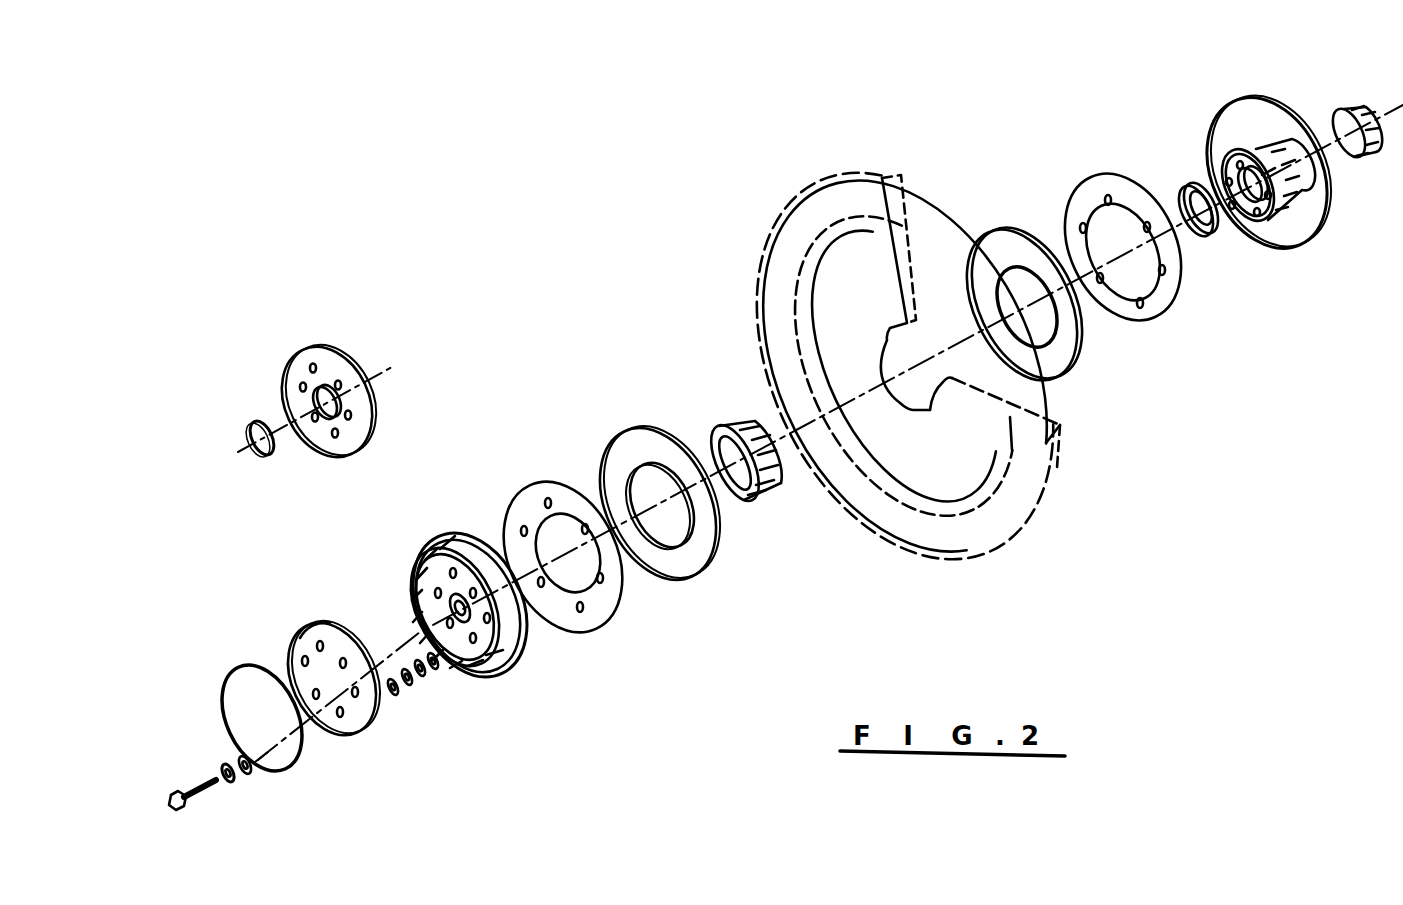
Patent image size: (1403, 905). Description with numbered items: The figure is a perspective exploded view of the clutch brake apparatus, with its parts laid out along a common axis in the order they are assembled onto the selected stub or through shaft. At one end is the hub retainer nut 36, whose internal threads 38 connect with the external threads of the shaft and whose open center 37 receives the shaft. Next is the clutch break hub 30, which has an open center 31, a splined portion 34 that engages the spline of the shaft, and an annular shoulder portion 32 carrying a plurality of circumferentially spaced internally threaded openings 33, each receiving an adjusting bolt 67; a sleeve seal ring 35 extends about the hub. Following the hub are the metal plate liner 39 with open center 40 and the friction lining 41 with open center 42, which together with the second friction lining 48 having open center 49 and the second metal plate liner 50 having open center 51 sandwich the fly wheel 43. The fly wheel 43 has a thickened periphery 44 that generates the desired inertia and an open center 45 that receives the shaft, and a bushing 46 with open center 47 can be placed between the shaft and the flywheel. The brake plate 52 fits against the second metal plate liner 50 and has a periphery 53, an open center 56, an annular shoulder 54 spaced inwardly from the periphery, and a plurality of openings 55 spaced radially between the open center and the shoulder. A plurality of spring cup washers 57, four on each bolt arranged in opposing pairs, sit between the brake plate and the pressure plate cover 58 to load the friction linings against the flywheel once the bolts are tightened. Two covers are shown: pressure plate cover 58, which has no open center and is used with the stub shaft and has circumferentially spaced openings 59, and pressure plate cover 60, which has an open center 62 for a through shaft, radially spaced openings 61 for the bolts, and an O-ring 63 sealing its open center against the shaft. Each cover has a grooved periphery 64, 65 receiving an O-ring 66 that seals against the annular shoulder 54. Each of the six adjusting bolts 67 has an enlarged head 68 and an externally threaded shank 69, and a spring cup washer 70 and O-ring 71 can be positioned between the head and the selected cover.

The clutch break hub 30 is at (1303, 233).
The open center 31 is at (1240, 146).
The annular shoulder portion 32 is at (1300, 193).
The internally threaded openings 33 is at (1236, 148).
The splined portion 34 is at (1246, 146).
The sleeve seal ring 35 is at (1352, 105).
The hub retainer nut 36 is at (1222, 235).
The open center 37 is at (1188, 195).
The internal threads 38 is at (1168, 200).
The metal plate liner 39 is at (1165, 300).
The open center 40 is at (1112, 233).
The friction lining 41 is at (1072, 345).
The open center 42 is at (1008, 283).
The fly wheel 43 is at (810, 220).
The thickened periphery 44 is at (889, 200).
The open center 45 is at (903, 400).
The bushing 46 is at (773, 495).
The open center 47 is at (730, 430).
The second friction lining 48 is at (702, 568).
The open center 49 is at (647, 487).
The second metal plate liner 50 is at (605, 612).
The open center 51 is at (552, 533).
The brake plate 52 is at (433, 560).
The periphery 53 is at (480, 547).
The annular shoulder 54 is at (510, 660).
The openings 55 is at (485, 655).
The open center 56 is at (415, 563).
The spring cup washers 57 is at (410, 680).
The pressure plate cover 58 is at (362, 737).
The openings 59 is at (287, 647).
The pressure plate cover 60 is at (307, 347).
The openings 61 is at (313, 368).
The open center 62 is at (317, 402).
The O-ring 63 is at (252, 452).
The periphery 64 is at (310, 620).
The periphery 65 is at (353, 363).
The O-ring 66 is at (237, 663).
The adjusting bolt 67 is at (190, 780).
The enlarged head 68 is at (170, 802).
The externally threaded shank 69 is at (222, 783).
The spring cup washer 70 is at (240, 778).
The O-ring 71 is at (263, 767).